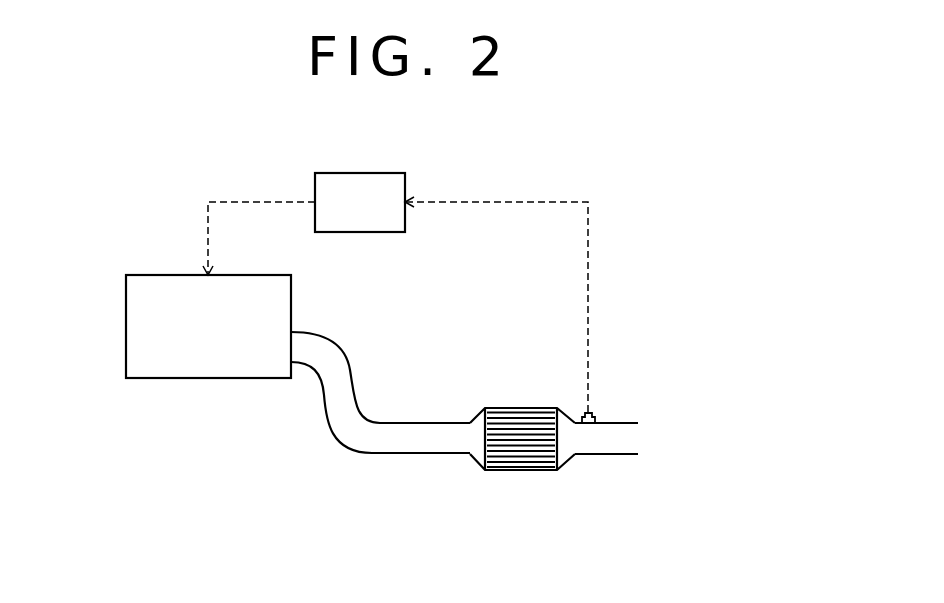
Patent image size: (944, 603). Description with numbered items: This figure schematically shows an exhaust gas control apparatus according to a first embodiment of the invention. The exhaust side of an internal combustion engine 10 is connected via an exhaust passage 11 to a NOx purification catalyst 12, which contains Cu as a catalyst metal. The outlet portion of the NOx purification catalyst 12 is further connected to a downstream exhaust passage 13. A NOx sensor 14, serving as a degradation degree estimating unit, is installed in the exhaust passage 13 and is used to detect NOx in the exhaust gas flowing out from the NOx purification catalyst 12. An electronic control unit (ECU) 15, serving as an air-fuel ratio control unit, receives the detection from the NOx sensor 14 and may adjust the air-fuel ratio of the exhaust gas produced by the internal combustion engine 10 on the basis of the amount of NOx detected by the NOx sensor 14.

The internal combustion engine 10 is at (208, 380).
The exhaust passage 11 is at (342, 430).
The NOx purification catalyst 12 is at (527, 425).
The exhaust passage 13 is at (610, 442).
The NOx sensor 14 is at (597, 418).
The electronic control unit (ECU) 15 is at (362, 232).